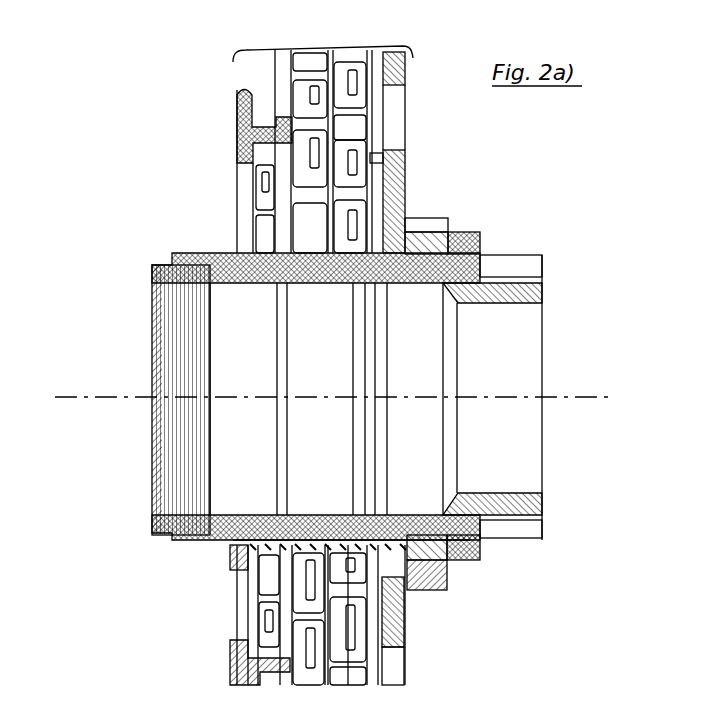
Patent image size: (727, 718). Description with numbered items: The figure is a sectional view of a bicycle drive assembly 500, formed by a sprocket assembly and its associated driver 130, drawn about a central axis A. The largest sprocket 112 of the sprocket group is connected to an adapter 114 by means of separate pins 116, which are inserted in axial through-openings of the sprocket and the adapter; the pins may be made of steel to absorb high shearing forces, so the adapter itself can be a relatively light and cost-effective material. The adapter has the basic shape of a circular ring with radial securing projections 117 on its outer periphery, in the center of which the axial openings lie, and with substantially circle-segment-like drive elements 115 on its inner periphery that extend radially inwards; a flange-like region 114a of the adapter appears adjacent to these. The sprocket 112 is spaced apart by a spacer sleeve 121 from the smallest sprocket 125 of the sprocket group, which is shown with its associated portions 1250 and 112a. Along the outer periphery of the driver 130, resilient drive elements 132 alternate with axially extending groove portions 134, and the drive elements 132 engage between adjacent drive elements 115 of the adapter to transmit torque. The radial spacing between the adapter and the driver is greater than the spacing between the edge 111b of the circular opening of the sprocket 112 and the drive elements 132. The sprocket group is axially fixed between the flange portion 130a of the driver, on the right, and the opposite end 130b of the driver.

The bicycle drive assembly 500 is at (578, 171).
The pins 116 is at (372, 40).
The sprocket 125 is at (226, 107).
The stator housing 1250 is at (232, 242).
The sprocket 112 is at (398, 161).
The radial securing projections 117 is at (424, 211).
The adapter 114 is at (461, 209).
The bearing seat flange 114a is at (442, 579).
The spacer sleeve 121 is at (282, 250).
The drive elements 132 is at (176, 258).
The edge 111b is at (395, 284).
The flange portion 130a is at (473, 251).
The driver 130 is at (545, 298).
The drive elements 115 is at (470, 531).
The shaft end section 130b is at (184, 526).
The groove portions 134 is at (190, 536).
The stator core section 112a is at (378, 560).
The rotation axis A is at (595, 397).